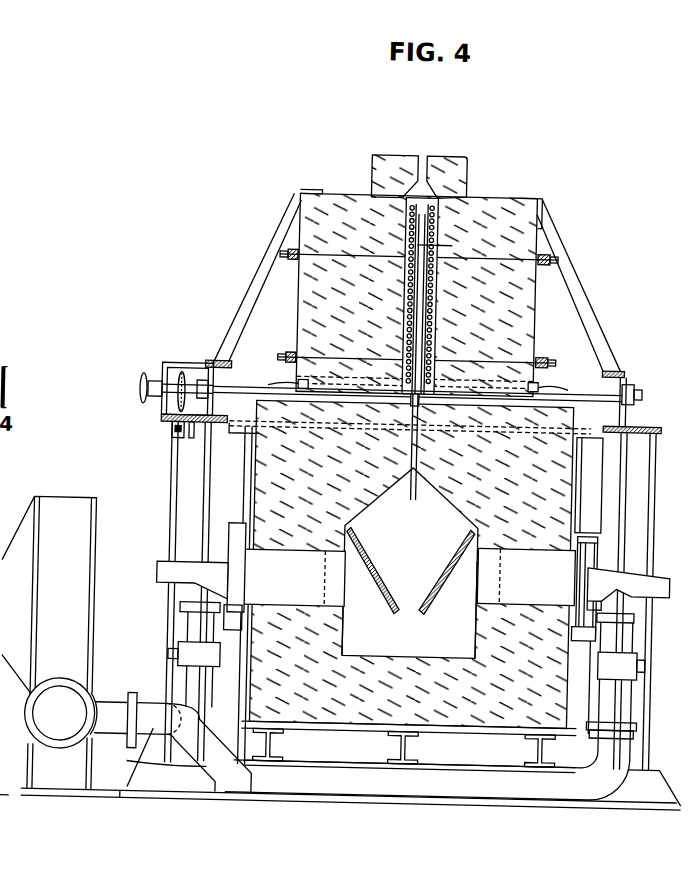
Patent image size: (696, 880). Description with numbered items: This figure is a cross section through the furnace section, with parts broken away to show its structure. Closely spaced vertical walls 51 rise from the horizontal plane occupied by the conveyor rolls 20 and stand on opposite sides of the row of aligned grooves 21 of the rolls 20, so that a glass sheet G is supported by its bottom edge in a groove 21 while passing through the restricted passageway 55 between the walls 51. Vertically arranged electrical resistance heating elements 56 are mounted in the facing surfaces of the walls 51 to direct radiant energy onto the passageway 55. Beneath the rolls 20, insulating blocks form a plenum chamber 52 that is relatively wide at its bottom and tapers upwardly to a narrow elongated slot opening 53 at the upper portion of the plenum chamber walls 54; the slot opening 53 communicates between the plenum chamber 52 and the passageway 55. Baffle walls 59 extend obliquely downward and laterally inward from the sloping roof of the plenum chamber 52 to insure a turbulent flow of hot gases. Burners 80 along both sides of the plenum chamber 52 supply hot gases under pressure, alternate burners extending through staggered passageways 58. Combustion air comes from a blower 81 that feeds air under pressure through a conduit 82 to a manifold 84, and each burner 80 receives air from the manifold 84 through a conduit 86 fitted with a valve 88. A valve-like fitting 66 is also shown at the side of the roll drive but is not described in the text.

The restricted passageway 55 is at (418, 205).
The vertical walls 51 is at (393, 202).
The electrical resistance heating elements 56 is at (403, 320).
The glass sheet G is at (444, 243).
The conveyor rolls 20 is at (601, 395).
The valve 66 is at (146, 406).
The plenum chamber walls 54 is at (256, 475).
The grooves 21 is at (409, 412).
The plenum chamber 52 is at (410, 562).
The passageways 58 is at (346, 605).
The slot opening 53 is at (416, 488).
The baffle walls 59 is at (379, 556).
The burners 80 is at (154, 585).
The conduit 86 is at (194, 632).
The valve 88 is at (182, 661).
The blower 81 is at (98, 540).
The conduit 82 is at (61, 713).
The manifold 84 is at (152, 769).